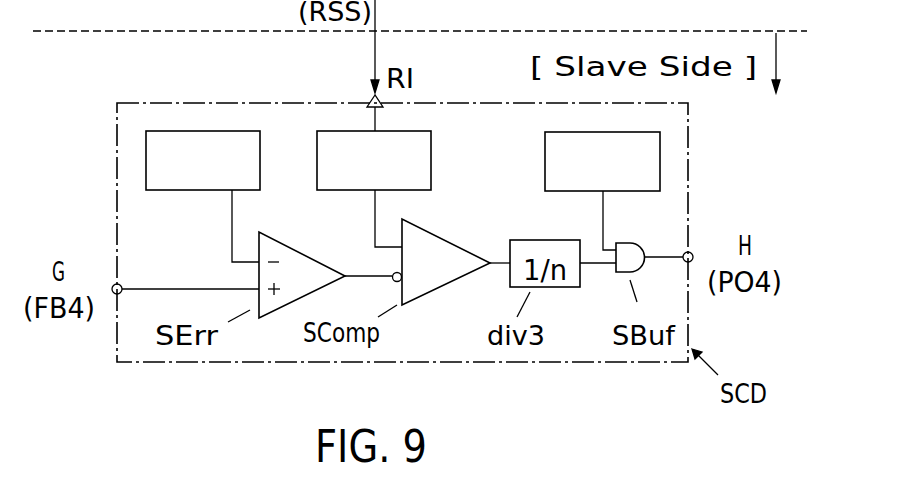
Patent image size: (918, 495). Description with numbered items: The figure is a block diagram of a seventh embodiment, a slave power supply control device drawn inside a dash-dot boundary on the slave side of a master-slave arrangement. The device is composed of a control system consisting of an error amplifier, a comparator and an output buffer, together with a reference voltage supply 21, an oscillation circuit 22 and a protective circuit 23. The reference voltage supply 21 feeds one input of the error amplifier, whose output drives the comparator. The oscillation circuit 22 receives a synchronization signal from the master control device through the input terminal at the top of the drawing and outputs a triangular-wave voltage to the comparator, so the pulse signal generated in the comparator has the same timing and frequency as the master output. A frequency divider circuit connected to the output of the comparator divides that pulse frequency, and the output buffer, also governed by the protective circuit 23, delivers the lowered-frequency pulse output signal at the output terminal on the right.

The reference voltage supply 21 is at (174, 196).
The oscillation circuit 22 is at (335, 197).
The protective circuit 23 is at (543, 196).